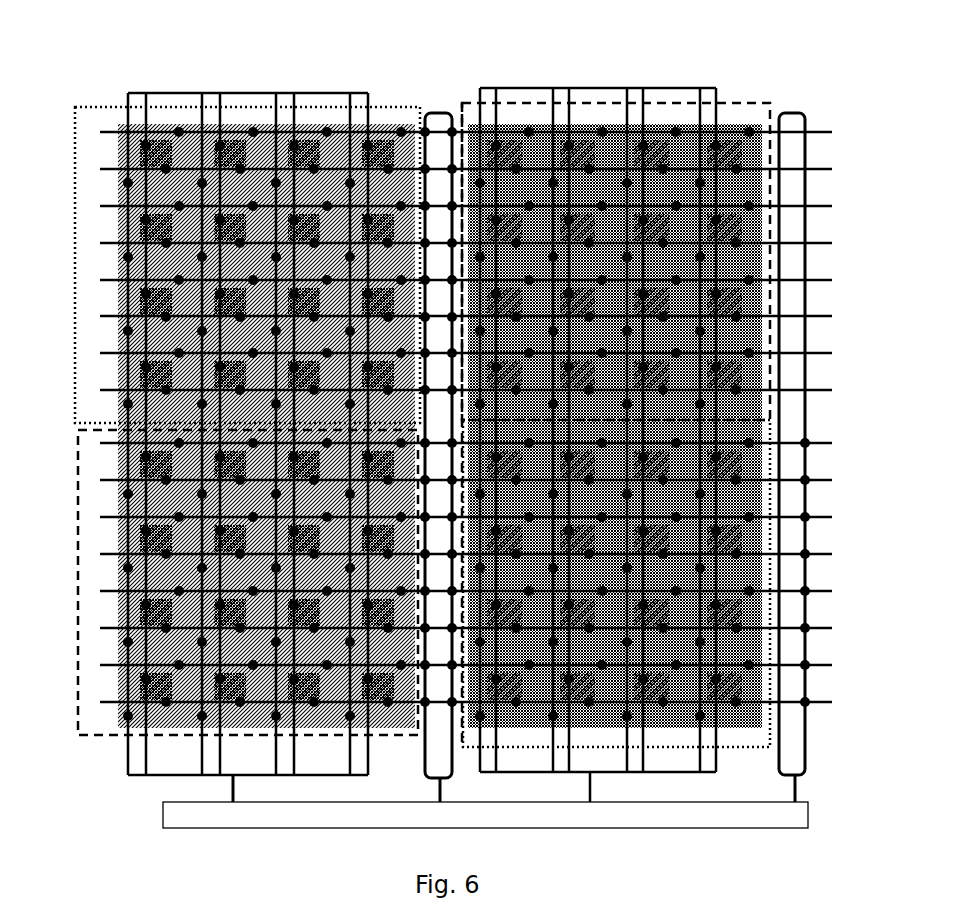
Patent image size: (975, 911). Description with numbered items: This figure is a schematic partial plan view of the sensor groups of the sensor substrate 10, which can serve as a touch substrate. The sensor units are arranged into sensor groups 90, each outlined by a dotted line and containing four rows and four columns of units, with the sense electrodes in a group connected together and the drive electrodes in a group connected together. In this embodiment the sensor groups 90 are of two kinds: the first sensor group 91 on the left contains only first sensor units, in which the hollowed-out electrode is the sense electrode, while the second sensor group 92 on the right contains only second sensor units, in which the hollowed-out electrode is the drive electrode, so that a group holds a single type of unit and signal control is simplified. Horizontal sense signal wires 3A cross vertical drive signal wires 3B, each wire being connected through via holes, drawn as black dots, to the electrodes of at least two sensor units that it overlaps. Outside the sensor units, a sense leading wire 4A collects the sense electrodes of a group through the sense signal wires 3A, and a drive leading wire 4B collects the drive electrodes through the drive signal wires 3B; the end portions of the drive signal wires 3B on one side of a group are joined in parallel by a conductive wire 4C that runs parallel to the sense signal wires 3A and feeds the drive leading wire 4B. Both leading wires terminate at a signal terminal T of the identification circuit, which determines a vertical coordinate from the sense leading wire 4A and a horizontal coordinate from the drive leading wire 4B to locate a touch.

The sensor substrate 10 is at (886, 31).
The sense signal wire 3A is at (100, 243).
The drive signal wire 3B is at (125, 118).
The sense leading wire 4A is at (806, 352).
The drive leading wire 4B is at (233, 792).
The conductive wire 4C is at (173, 775).
The sensor group 90 is at (487, 50).
The first sensor group 91 is at (400, 100).
The second sensor group 92 is at (520, 100).
The signal terminal T is at (800, 800).